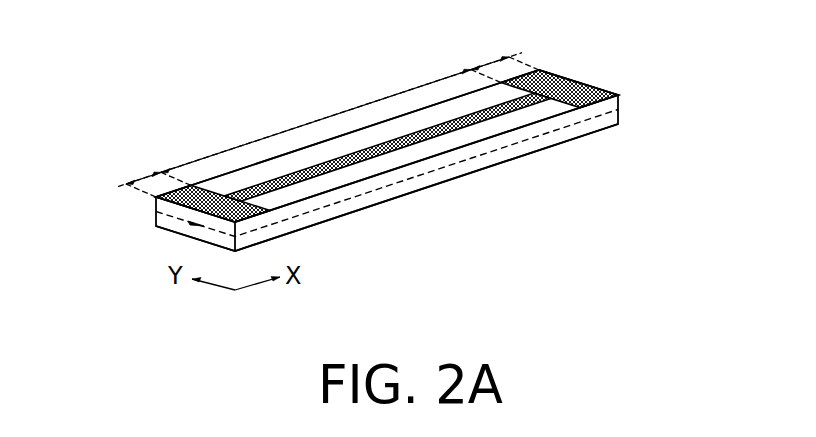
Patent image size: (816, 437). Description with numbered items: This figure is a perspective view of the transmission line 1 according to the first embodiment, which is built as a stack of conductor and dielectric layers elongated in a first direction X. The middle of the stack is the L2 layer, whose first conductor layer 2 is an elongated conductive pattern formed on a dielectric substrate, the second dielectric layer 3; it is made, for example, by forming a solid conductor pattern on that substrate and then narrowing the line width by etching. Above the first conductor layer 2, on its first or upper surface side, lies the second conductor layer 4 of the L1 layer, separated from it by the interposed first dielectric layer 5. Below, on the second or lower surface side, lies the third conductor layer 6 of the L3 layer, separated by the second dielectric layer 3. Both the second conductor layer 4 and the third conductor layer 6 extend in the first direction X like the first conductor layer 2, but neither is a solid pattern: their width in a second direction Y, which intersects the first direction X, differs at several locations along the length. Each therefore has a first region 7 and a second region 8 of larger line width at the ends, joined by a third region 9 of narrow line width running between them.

The transmission line 1 is at (78, 313).
The first conductor layer 2 is at (192, 225).
The second dielectric layer 3 is at (620, 117).
The second conductor layer 4 is at (558, 80).
The first dielectric layer 5 is at (620, 102).
The third conductor layer 6 is at (597, 129).
The first region 7 is at (152, 178).
The second region 8 is at (489, 64).
The third region 9 is at (322, 119).